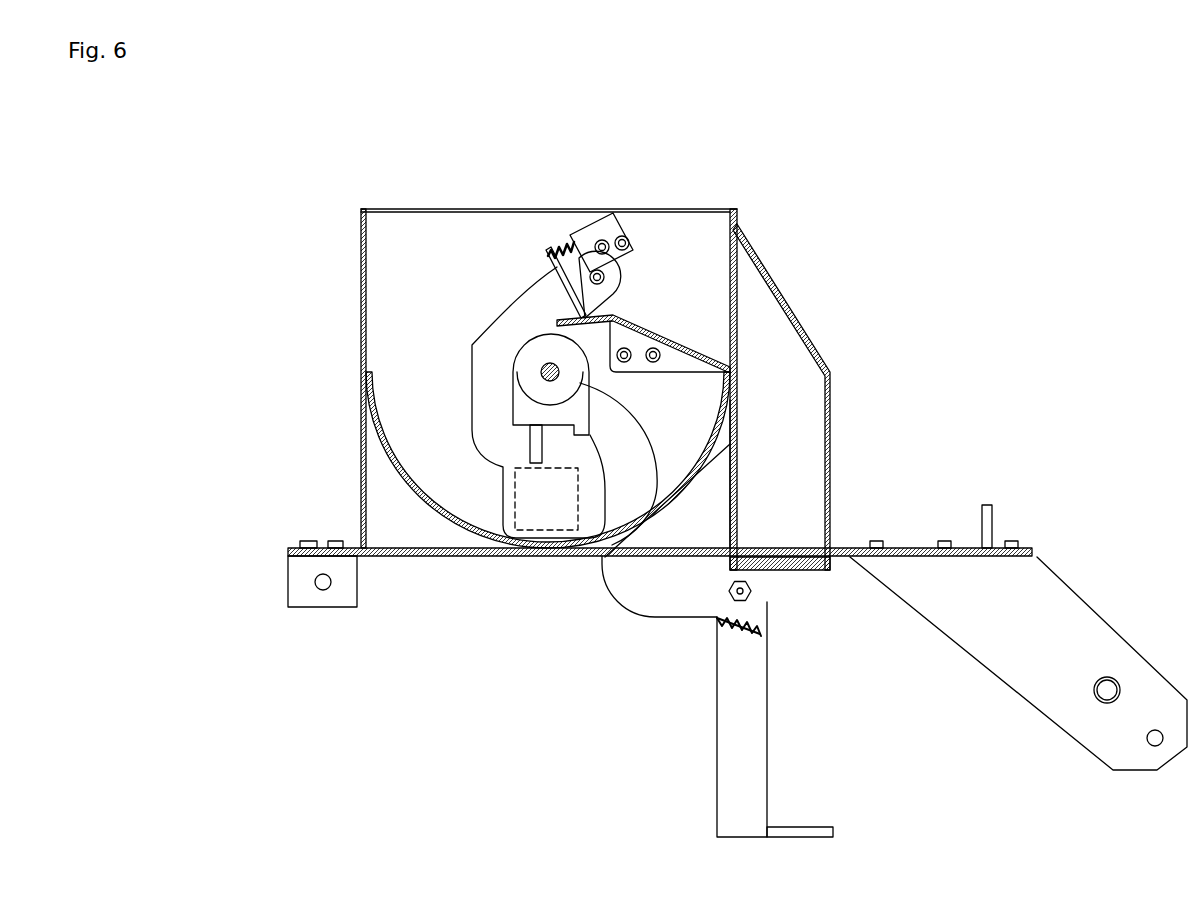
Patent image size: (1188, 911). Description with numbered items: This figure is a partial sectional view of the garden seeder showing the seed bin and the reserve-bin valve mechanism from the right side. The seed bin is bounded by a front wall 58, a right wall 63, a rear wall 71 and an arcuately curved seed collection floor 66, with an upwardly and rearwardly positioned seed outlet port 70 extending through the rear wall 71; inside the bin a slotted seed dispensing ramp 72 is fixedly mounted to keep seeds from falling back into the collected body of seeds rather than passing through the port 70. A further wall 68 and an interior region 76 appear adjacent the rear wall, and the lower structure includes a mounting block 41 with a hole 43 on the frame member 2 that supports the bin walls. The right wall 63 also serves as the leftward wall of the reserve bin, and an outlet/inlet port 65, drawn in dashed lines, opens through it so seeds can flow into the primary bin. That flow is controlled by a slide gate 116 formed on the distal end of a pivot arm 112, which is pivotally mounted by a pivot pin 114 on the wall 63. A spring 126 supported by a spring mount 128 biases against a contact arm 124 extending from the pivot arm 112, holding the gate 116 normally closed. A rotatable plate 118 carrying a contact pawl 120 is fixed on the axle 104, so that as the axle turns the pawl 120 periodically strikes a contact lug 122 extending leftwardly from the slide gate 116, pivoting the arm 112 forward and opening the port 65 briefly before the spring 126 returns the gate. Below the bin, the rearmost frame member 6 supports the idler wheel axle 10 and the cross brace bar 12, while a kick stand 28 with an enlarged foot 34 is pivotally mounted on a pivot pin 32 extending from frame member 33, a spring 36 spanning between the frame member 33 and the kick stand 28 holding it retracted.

The frame member 2 is at (366, 556).
The rearmost frame member 6 is at (1043, 603).
The idler wheel axle 10 is at (1105, 695).
The cross brace bar 12 is at (1155, 746).
The kick stand 28 is at (753, 762).
The pivot pin 32 is at (785, 572).
The frame member 33 is at (637, 578).
The foot 34 is at (785, 830).
The spring 36 is at (752, 637).
The mounting block 41 is at (296, 596).
The mounting hole 43 is at (318, 578).
The front wall 58 is at (361, 252).
The right wall 63 is at (418, 228).
The outlet/inlet port 65 is at (548, 500).
The seed collection floor 66 is at (383, 430).
The inclined plate 68 is at (800, 324).
The seed outlet port 70 is at (730, 268).
The rear wall 71 is at (732, 417).
The seed dispensing ramp 72 is at (660, 337).
The chamber 76 is at (788, 433).
The axle 104 is at (543, 366).
The pivot arm 112 is at (487, 384).
The pivot pin 114 is at (620, 280).
The slide gate 116 is at (510, 498).
The rotatable plate 118 is at (605, 557).
The contact pawl 120 is at (612, 545).
The contact lug 122 is at (528, 466).
The contact arm 124 is at (522, 250).
The spring 126 is at (557, 250).
The spring mount 128 is at (610, 215).